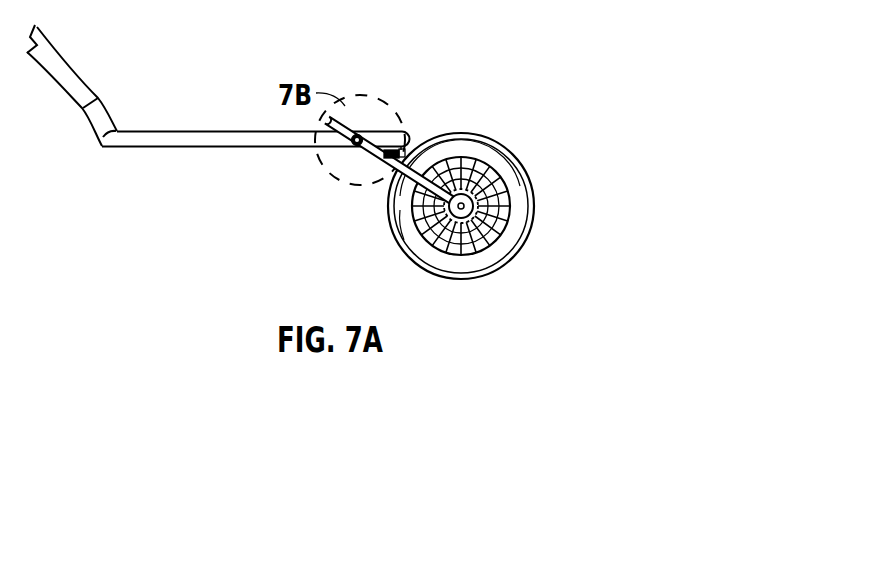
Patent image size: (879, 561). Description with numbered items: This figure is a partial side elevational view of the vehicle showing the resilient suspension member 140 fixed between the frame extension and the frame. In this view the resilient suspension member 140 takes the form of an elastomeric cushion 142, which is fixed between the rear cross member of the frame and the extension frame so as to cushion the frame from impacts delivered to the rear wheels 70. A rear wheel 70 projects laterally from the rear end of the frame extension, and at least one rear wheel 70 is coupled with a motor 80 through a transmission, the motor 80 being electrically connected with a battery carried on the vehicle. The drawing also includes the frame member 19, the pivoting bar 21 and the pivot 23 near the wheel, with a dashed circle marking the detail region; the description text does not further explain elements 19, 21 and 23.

The frame tube 19 is at (162, 135).
The fork bar 21 is at (378, 157).
The pivot 23 is at (359, 135).
The resilient suspension member 140 is at (464, 122).
The elastomeric cushion 142 is at (407, 155).
The rear wheel 70 is at (493, 157).
The motor 80 is at (507, 205).